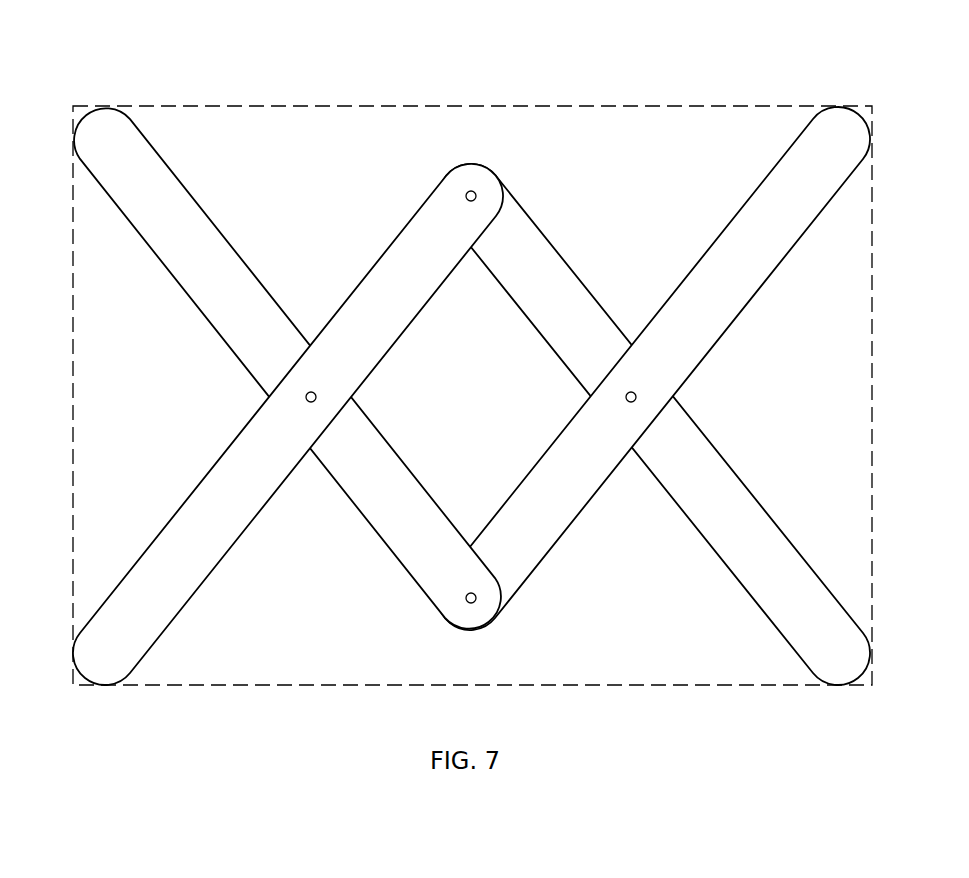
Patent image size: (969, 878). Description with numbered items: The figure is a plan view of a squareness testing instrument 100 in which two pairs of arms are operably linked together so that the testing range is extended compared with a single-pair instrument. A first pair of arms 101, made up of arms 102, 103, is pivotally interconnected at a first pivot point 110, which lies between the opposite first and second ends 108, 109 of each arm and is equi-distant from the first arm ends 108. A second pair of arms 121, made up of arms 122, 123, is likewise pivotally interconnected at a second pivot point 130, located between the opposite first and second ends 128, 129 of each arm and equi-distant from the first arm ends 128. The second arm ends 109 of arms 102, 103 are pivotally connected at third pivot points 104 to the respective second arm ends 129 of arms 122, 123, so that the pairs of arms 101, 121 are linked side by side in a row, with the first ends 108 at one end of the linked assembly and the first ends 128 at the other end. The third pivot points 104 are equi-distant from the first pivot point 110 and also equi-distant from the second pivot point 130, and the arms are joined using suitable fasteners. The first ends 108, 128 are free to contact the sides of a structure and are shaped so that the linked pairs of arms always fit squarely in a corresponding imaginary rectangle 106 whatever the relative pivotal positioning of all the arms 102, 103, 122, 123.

The testing instrument 100 is at (471, 363).
The first pair of arms 101 is at (288, 396).
The arm 102 is at (430, 305).
The arm 103 is at (410, 458).
The third pivot point 104 is at (466, 195).
The enclosure boundary 106 is at (347, 105).
The first arm end 108 is at (132, 150).
The second arm end 109 is at (472, 237).
The first pivot point 110 is at (314, 392).
The second pair of arms 121 is at (654, 396).
The arm 122 is at (748, 307).
The arm 123 is at (742, 476).
The first arm end 128 is at (810, 152).
The second arm end 129 is at (463, 582).
The second pivot point 130 is at (634, 392).